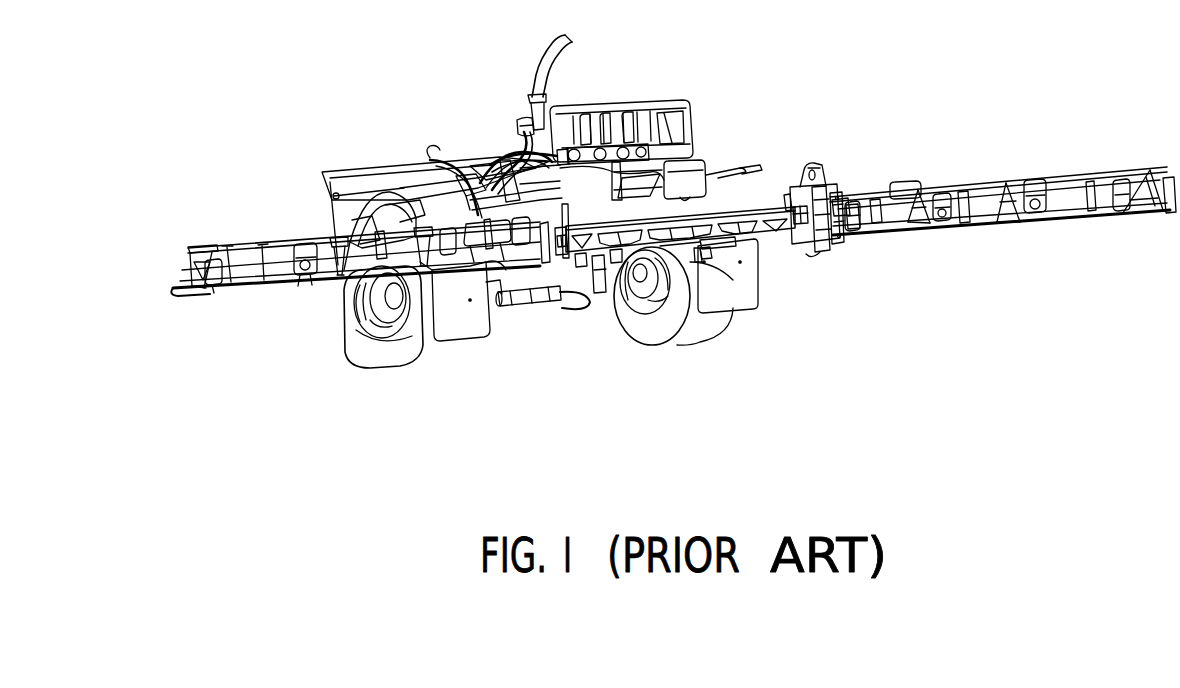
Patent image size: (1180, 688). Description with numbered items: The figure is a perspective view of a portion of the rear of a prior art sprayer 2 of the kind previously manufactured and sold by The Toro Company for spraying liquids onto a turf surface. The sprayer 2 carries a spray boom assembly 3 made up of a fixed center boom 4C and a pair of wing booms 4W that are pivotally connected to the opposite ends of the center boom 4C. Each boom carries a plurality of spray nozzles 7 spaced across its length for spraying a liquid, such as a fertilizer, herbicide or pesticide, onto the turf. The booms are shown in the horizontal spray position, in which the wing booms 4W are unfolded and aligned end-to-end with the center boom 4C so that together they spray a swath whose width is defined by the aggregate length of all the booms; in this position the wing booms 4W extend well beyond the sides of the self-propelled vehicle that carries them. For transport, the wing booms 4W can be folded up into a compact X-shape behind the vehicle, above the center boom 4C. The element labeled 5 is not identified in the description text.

The sprayer 2 is at (734, 56).
The spray boom assembly 3 is at (763, 192).
The center boom 4C is at (783, 256).
The wing booms 4W is at (296, 301).
The frame / side panel 5 is at (396, 178).
The spray nozzles 7 is at (304, 262).